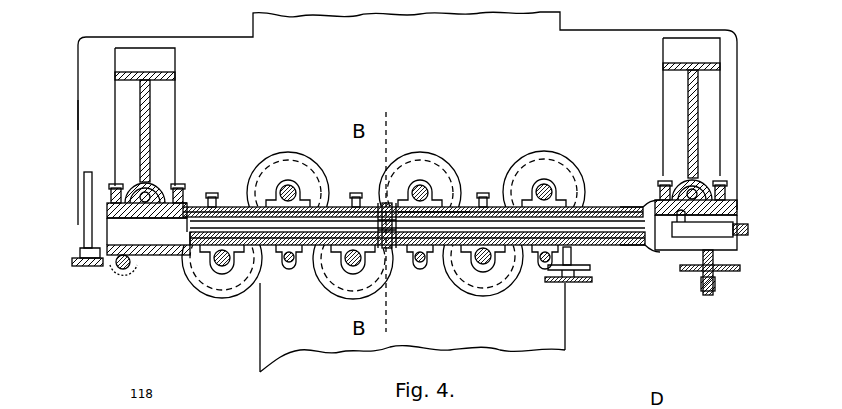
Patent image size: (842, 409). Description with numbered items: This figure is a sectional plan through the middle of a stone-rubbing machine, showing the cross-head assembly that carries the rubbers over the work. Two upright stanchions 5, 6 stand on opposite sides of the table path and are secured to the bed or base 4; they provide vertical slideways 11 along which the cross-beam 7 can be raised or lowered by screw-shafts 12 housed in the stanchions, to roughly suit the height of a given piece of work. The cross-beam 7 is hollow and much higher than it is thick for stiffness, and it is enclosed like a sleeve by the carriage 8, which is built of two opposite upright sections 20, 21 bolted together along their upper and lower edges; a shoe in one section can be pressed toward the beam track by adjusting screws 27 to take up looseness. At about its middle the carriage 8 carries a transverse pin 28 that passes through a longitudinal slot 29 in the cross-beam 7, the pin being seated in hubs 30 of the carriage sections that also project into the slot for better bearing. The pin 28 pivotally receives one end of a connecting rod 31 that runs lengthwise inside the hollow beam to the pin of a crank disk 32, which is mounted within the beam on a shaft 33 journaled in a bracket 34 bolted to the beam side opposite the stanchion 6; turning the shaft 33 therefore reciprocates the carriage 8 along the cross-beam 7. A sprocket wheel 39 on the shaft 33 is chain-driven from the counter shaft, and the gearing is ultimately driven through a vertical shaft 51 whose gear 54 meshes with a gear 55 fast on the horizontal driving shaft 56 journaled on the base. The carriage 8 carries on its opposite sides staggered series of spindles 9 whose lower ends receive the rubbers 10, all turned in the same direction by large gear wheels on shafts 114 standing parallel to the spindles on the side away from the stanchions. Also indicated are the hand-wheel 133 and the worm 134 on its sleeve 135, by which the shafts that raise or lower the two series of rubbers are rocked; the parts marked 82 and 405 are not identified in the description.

The bed or base 4 is at (407, 192).
The stanchion 5 is at (152, 116).
The stanchion 6 is at (699, 86).
The cross-beam 7 is at (620, 205).
The carriage 8 is at (228, 205).
The spindles 9 is at (422, 190).
The rubbers 10 is at (556, 152).
The vertical slideways 11 is at (728, 188).
The screw-shafts 12 is at (145, 190).
The carriage section 20 is at (310, 268).
The carriage section 21 is at (340, 205).
The adjusting screws 27 is at (212, 194).
The transverse pin 28 is at (390, 203).
The longitudinal slot 29 is at (407, 268).
The hubs 30 is at (418, 210).
The connecting rod 31 is at (483, 192).
The crank disk 32 is at (750, 230).
The shaft 33 is at (708, 296).
The bracket 34 is at (716, 286).
The sprocket wheel 39 is at (682, 271).
The vertical shaft 51 is at (121, 270).
The gear 54 is at (134, 270).
The gear 55 is at (76, 268).
The horizontal driving shaft 56 is at (88, 197).
The roller 82 is at (291, 188).
The shafts 114 is at (285, 267).
The hand-wheel 133 is at (580, 283).
The worm 134 is at (590, 266).
The sleeve 135 is at (572, 252).
The frame wall 405 is at (78, 116).